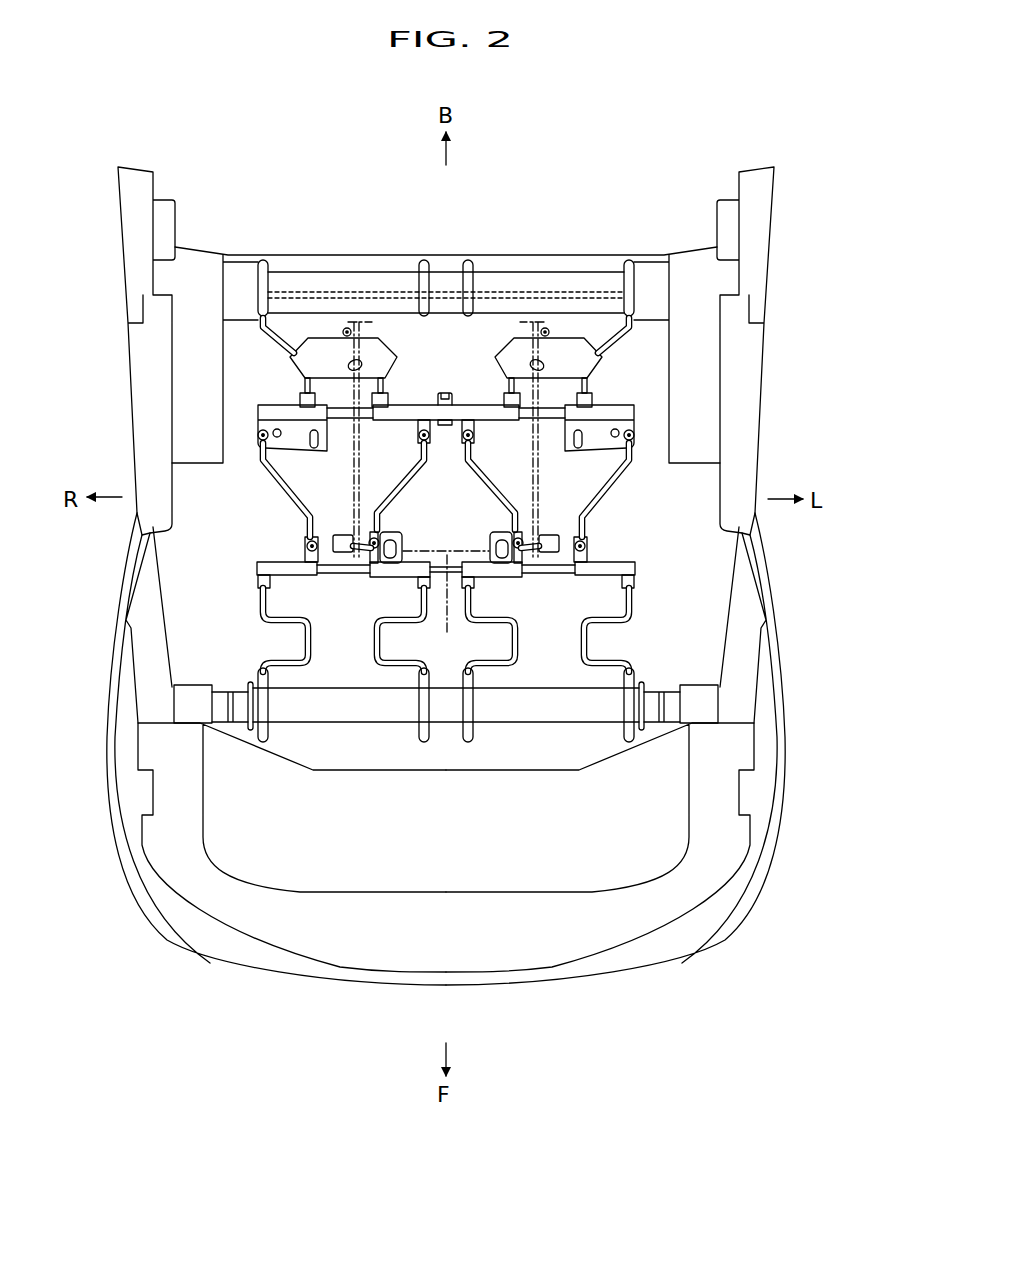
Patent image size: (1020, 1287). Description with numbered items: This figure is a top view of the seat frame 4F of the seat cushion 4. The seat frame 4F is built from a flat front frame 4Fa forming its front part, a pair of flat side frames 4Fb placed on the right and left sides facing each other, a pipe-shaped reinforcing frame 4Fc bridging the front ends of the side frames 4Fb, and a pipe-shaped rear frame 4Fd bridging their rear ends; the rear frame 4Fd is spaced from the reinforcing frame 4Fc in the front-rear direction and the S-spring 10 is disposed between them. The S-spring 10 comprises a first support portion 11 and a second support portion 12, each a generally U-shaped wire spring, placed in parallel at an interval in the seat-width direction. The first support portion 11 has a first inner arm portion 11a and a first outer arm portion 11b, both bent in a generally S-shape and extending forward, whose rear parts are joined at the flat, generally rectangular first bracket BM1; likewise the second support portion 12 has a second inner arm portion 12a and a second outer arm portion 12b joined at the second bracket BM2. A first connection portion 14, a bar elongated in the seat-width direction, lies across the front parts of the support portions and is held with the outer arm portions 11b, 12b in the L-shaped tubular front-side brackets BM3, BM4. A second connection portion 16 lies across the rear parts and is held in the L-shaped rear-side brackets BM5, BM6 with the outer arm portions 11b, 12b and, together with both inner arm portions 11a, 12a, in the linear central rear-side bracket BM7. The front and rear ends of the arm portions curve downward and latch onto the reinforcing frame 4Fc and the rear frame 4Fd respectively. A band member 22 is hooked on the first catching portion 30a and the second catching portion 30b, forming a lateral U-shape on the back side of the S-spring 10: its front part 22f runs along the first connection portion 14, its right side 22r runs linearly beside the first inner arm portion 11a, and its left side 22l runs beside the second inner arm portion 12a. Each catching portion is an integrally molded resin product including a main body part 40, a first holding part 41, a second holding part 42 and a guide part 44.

The seat cushion 4 is at (446, 581).
The seat frame 4F is at (657, 166).
The front frame 4Fa is at (503, 950).
The side frames 4Fb is at (143, 598).
The reinforcing frame 4Fc is at (652, 690).
The rear frame 4Fd is at (547, 282).
The S-spring 10 is at (468, 532).
The first support portion 11 is at (393, 824).
The first inner arm portion 11a is at (398, 665).
The first outer arm portion 11b is at (287, 665).
The second support portion 12 is at (596, 824).
The second inner arm portion 12a is at (490, 665).
The second outer arm portion 12b is at (603, 665).
The first connection portion 14 is at (553, 555).
The second connection portion 16 is at (338, 410).
The band member 22 is at (346, 465).
The right side of band member 22r is at (363, 448).
The left side of band member 22l is at (528, 448).
The front part of band member 22f is at (442, 607).
The first catching portion 30a is at (341, 552).
The second catching portion 30b is at (547, 552).
The main body part 40 is at (383, 577).
The first holding part 41 is at (358, 556).
The second holding part 42 is at (488, 534).
The guide part 44 is at (340, 532).
The first bracket BM1 is at (373, 350).
The second bracket BM2 is at (568, 352).
The front-side bracket BM3 is at (277, 563).
The front-side bracket BM4 is at (617, 568).
The rear-side bracket BM5 is at (290, 410).
The rear-side bracket BM6 is at (600, 407).
The rear-side bracket BM7 is at (405, 408).